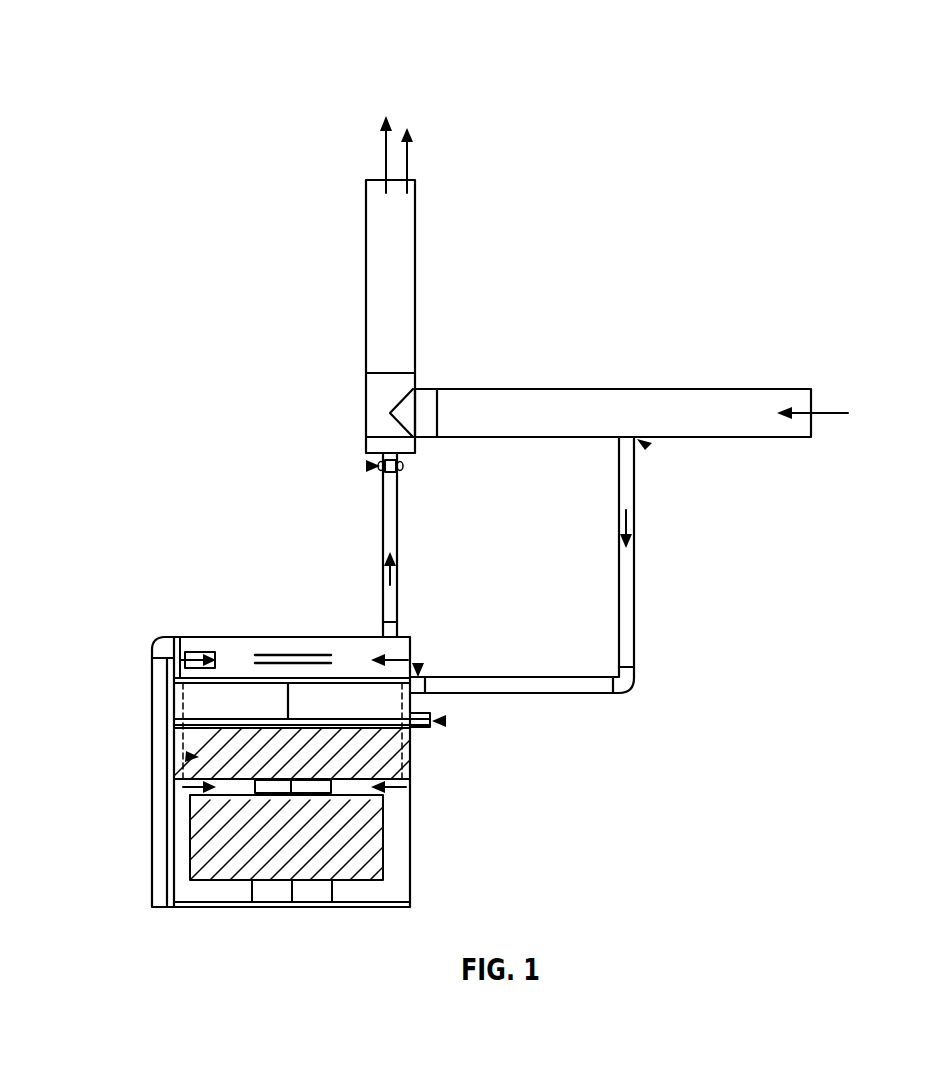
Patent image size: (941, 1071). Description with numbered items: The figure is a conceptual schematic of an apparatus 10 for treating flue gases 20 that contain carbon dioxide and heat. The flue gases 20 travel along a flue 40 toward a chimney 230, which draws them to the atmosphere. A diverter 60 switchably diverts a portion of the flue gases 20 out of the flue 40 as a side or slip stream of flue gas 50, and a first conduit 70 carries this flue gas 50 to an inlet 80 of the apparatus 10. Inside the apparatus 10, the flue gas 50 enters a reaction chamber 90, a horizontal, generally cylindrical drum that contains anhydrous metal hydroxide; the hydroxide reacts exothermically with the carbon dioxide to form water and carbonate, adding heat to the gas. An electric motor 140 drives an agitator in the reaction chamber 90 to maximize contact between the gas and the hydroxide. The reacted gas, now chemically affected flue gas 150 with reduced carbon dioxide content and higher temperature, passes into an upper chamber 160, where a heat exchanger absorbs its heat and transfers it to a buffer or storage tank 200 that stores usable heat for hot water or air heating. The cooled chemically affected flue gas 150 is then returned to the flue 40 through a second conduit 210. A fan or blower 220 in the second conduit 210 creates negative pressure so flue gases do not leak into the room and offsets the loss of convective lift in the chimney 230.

The apparatus 10 is at (213, 102).
The flue gases 20 is at (408, 161).
The flue 40 is at (578, 389).
The flue gas 50 is at (632, 527).
The diverter 60 is at (645, 445).
The first conduit 70 is at (634, 626).
The inlet 80 is at (418, 666).
The reaction chamber 90 is at (188, 756).
The electric motor 140 is at (444, 722).
The chemically affected flue gas 150 is at (386, 161).
The upper chamber 160 is at (283, 637).
The buffer or storage tank 200 is at (360, 843).
The second conduit 210 is at (397, 500).
The fan or blower 220 is at (368, 465).
The chimney 230 is at (388, 283).